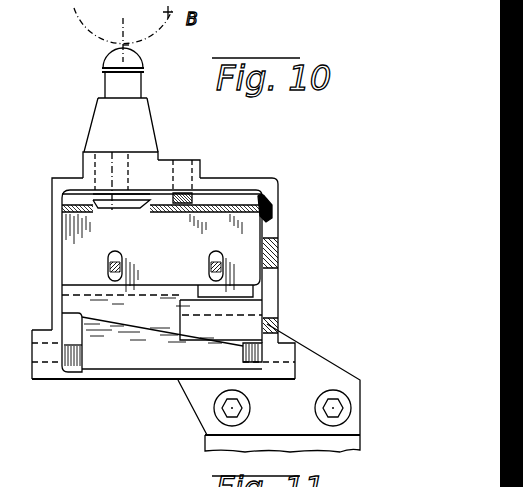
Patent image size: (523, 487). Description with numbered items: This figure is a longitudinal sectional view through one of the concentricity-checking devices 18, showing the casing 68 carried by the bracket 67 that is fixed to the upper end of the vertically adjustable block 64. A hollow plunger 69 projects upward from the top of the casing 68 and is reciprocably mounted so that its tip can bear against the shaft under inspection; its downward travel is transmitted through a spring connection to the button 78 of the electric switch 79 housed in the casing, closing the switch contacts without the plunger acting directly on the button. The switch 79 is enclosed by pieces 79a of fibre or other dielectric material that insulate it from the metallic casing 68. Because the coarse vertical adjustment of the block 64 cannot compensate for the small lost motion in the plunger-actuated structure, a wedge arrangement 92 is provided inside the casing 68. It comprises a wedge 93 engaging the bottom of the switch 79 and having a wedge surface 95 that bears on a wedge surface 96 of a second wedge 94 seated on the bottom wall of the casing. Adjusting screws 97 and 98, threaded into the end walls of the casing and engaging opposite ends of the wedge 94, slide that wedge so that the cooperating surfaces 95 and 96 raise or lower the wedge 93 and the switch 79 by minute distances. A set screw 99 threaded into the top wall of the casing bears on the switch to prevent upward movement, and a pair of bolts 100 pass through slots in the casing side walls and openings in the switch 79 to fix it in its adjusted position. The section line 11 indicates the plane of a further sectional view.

The section line 11- 11 is at (130, 24).
The device for checking concentricity 18 is at (44, 200).
The block 64 is at (353, 442).
The bracket 67 is at (343, 373).
The casing 68 is at (278, 250).
The hollow plunger 69 is at (110, 83).
The button 78 is at (118, 198).
The electric switch 79 is at (77, 255).
The pieces of fibre 79a is at (273, 211).
The wedge arrangement 92 is at (139, 334).
The wedge 93 is at (252, 318).
The wedge 94 is at (167, 360).
The wedge surface 95 is at (72, 318).
The wedge surface 96 is at (232, 342).
The adjusting screw 97 is at (72, 366).
The adjusting screw 98 is at (262, 352).
The set screw 99 is at (200, 192).
The bolts 100 is at (207, 270).